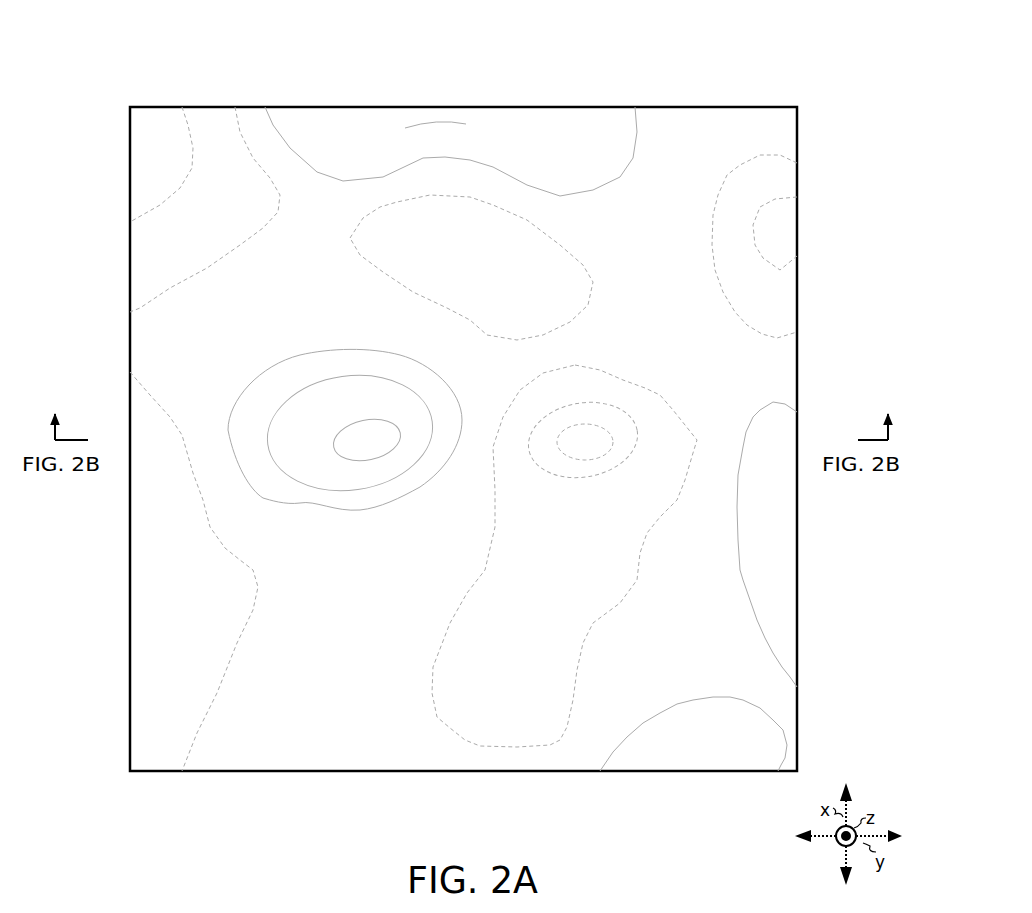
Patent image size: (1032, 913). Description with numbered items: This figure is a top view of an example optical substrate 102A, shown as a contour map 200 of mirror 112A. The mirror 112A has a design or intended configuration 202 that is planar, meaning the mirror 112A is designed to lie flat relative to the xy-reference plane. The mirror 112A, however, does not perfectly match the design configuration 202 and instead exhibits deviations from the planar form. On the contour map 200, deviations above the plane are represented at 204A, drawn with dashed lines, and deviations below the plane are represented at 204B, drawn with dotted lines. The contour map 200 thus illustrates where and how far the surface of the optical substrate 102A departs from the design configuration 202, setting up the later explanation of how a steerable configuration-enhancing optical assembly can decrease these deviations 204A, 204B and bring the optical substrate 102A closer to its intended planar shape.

The optical substrate 102A is at (320, 30).
The contour map 200 is at (173, 107).
The mirror 112A is at (497, 107).
The design configuration 202 is at (688, 167).
The deviations above the plane 204A is at (593, 425).
The deviations below the plane 204B is at (347, 418).